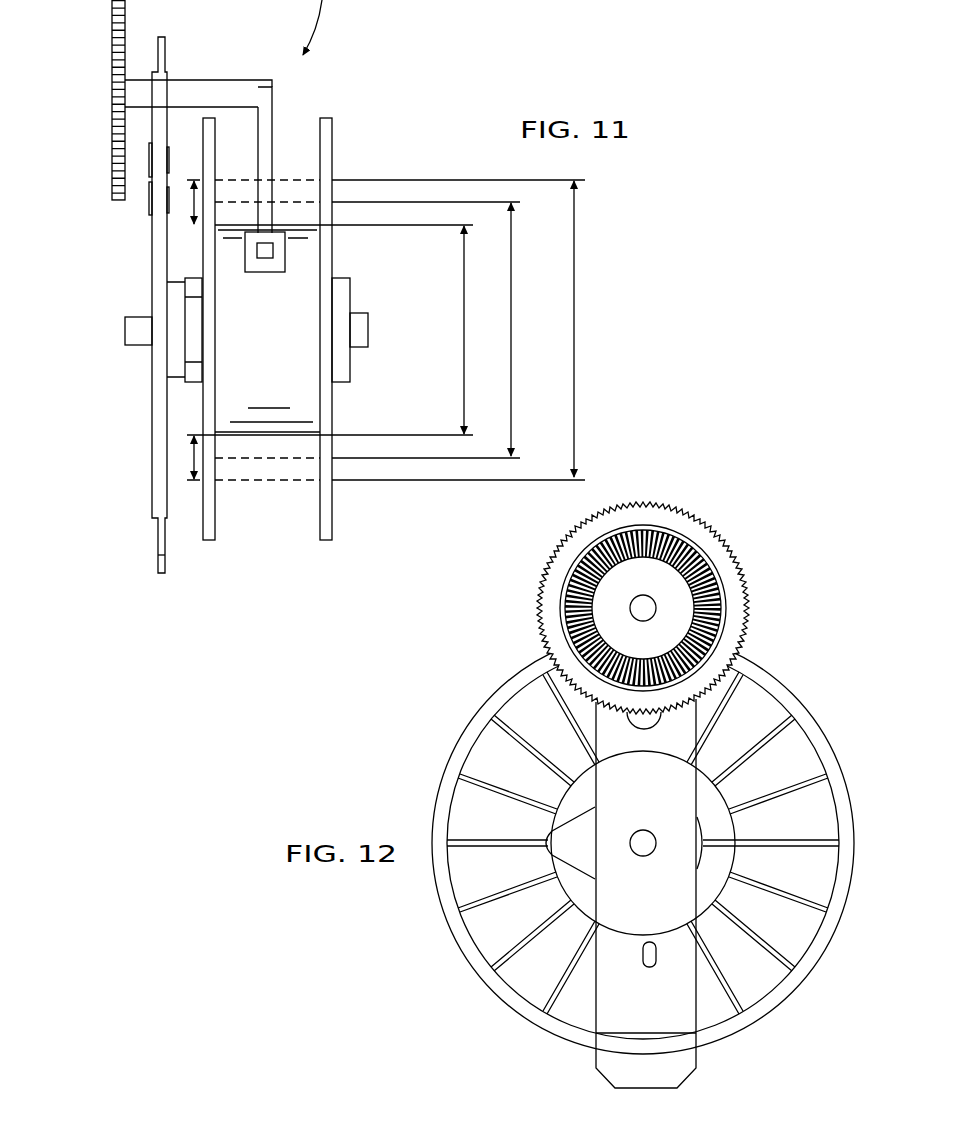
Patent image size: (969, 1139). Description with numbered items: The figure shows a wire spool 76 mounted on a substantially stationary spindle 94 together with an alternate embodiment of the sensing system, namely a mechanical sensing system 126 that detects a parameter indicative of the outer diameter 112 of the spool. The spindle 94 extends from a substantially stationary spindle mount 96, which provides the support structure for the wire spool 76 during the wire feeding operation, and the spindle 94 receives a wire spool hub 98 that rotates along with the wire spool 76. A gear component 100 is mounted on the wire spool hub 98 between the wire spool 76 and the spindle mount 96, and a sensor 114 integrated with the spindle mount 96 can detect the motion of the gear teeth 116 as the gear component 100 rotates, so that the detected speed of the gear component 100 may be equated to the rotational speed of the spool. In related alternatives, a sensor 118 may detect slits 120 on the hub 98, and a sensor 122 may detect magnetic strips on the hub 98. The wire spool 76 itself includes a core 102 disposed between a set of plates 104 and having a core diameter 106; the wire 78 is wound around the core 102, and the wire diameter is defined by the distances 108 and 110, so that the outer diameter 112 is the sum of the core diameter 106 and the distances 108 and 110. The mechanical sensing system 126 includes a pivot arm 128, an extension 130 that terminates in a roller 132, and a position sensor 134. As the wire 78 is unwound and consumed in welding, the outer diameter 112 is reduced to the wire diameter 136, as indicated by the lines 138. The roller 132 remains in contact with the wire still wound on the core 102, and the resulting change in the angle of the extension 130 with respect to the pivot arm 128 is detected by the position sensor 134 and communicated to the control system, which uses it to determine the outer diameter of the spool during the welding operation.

In FIG. 11, the wire spool 76 is at (320, 86).
In FIG. 12, the wire spool 76 is at (430, 718).
In FIG. 11, the wire 78 is at (233, 179).
In FIG. 11, the spindle 94 is at (385, 322).
In FIG. 11, the spindle mount 96 is at (158, 297).
In FIG. 12, the spindle mount 96 is at (605, 795).
In FIG. 11, the wire spool hub 98 is at (340, 281).
In FIG. 12, the gear component 100 is at (688, 526).
In FIG. 11, the core 102 is at (312, 255).
In FIG. 11, the plates 104 is at (209, 543).
In FIG. 12, the plates 104 is at (834, 768).
In FIG. 11, the core diameter 106 is at (465, 330).
In FIG. 11, the wire diameter distance 108 is at (193, 201).
In FIG. 11, the wire diameter distance 110 is at (191, 455).
In FIG. 11, the outer diameter 112 is at (575, 330).
In FIG. 11, the sensor 114 is at (150, 162).
In FIG. 12, the gear teeth 116 is at (552, 559).
In FIG. 11, the sensor 118 is at (150, 200).
In FIG. 12, the slits 120 is at (565, 609).
In FIG. 12, the sensor 122 is at (642, 718).
In FIG. 11, the mechanical sensing system 126 is at (214, 58).
In FIG. 11, the pivot arm 128 is at (218, 89).
In FIG. 11, the extension 130 is at (266, 124).
In FIG. 11, the roller 132 is at (244, 254).
In FIG. 11, the position sensor 134 is at (274, 254).
In FIG. 11, the wire diameter 136 is at (512, 330).
In FIG. 11, the lines 138 is at (300, 202).